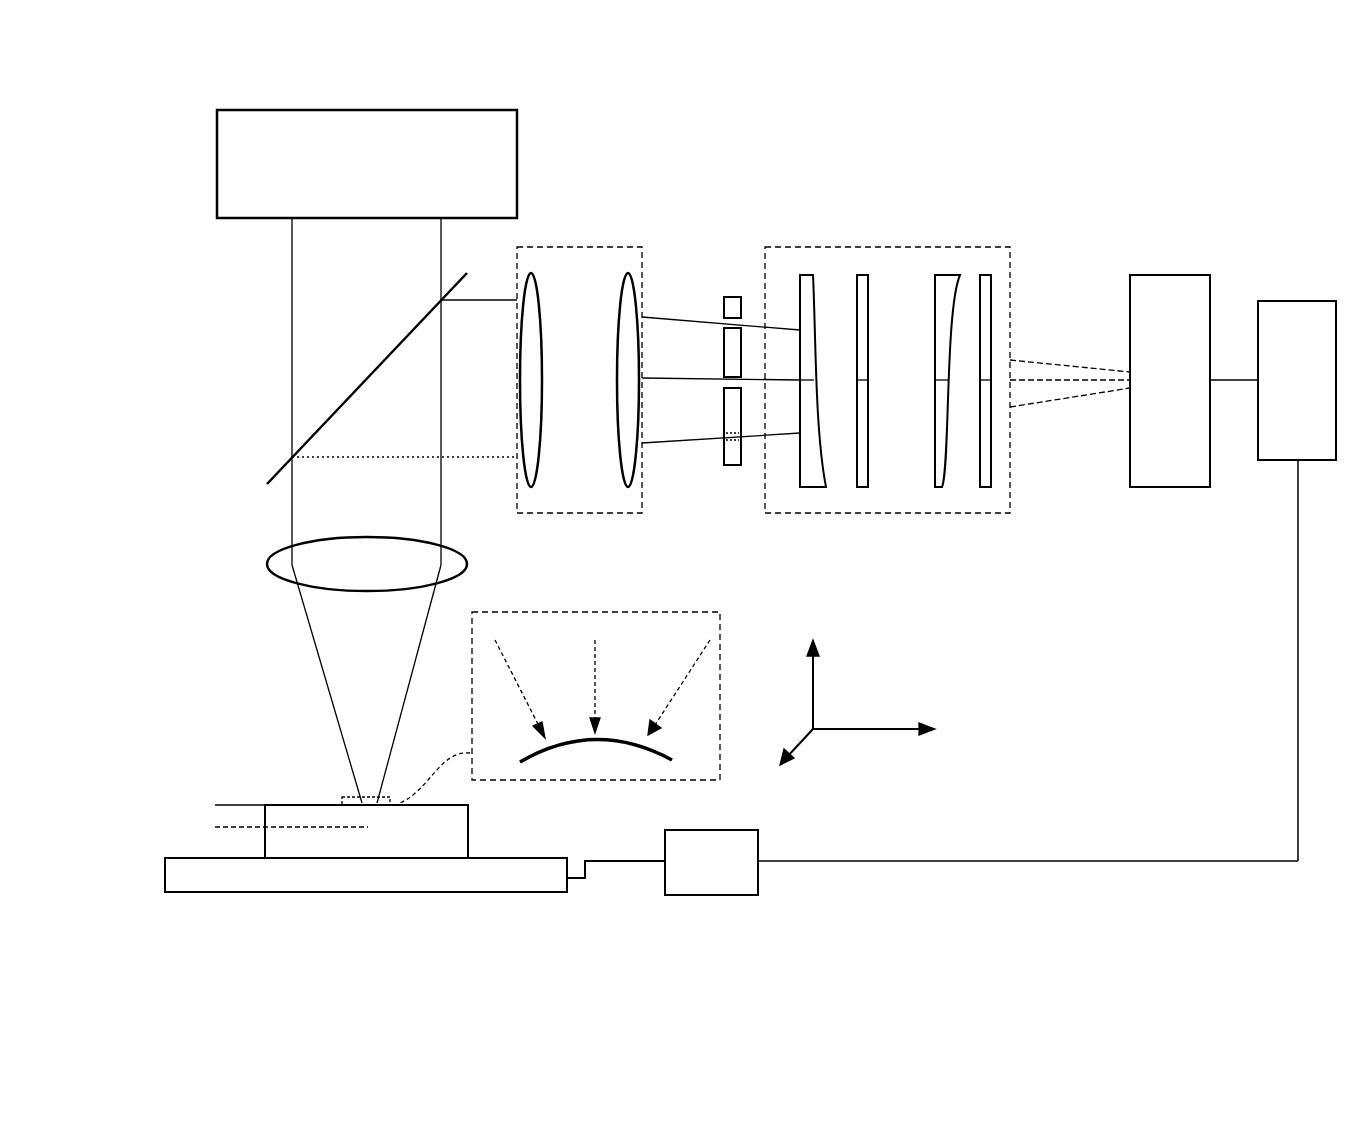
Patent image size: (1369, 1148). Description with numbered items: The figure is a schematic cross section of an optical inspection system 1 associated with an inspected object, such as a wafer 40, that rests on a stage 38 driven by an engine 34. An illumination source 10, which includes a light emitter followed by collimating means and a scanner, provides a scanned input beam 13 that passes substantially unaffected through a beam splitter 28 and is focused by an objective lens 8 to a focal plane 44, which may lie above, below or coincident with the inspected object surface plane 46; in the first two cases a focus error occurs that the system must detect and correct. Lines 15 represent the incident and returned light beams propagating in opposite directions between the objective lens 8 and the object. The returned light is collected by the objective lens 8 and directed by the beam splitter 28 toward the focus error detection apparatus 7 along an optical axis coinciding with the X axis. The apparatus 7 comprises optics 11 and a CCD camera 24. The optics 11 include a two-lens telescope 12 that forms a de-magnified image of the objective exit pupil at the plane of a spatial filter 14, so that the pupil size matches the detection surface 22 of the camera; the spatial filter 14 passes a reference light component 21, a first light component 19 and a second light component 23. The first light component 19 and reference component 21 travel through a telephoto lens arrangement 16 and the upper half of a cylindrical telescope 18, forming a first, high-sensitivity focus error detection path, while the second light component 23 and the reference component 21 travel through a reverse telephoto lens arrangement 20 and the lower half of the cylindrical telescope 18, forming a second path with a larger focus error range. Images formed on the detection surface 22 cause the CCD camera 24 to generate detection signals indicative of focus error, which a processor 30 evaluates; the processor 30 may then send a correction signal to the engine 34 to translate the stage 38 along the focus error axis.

The optical inspection system 1 is at (730, 538).
The focus error detection apparatus 7 is at (1168, 182).
The objective lens 8 is at (267, 558).
The illumination source 10 is at (367, 164).
The optics 11 is at (955, 585).
The telescope 12 is at (579, 380).
The input beam 13 is at (286, 341).
The spatial filter 14 is at (733, 296).
The returned light beam 15 is at (320, 658).
The telephoto lens arrangement 16 is at (813, 285).
The cylindrical telescope 18 is at (962, 240).
The first light component 19 is at (688, 306).
The reverse telephoto lens arrangement 20 is at (862, 392).
The reference light component 21 is at (688, 372).
The detection surface 22 is at (1128, 490).
The second light component 23 is at (700, 438).
The CCD camera 24 is at (1134, 406).
The beam splitter 28 is at (268, 473).
The processor 30 is at (1297, 581).
The engine 34 is at (981, 862).
The stage 38 is at (415, 875).
The wafer 40 is at (366, 831).
The focal plane 44 is at (246, 831).
The inspected object surface plane 46 is at (199, 782).